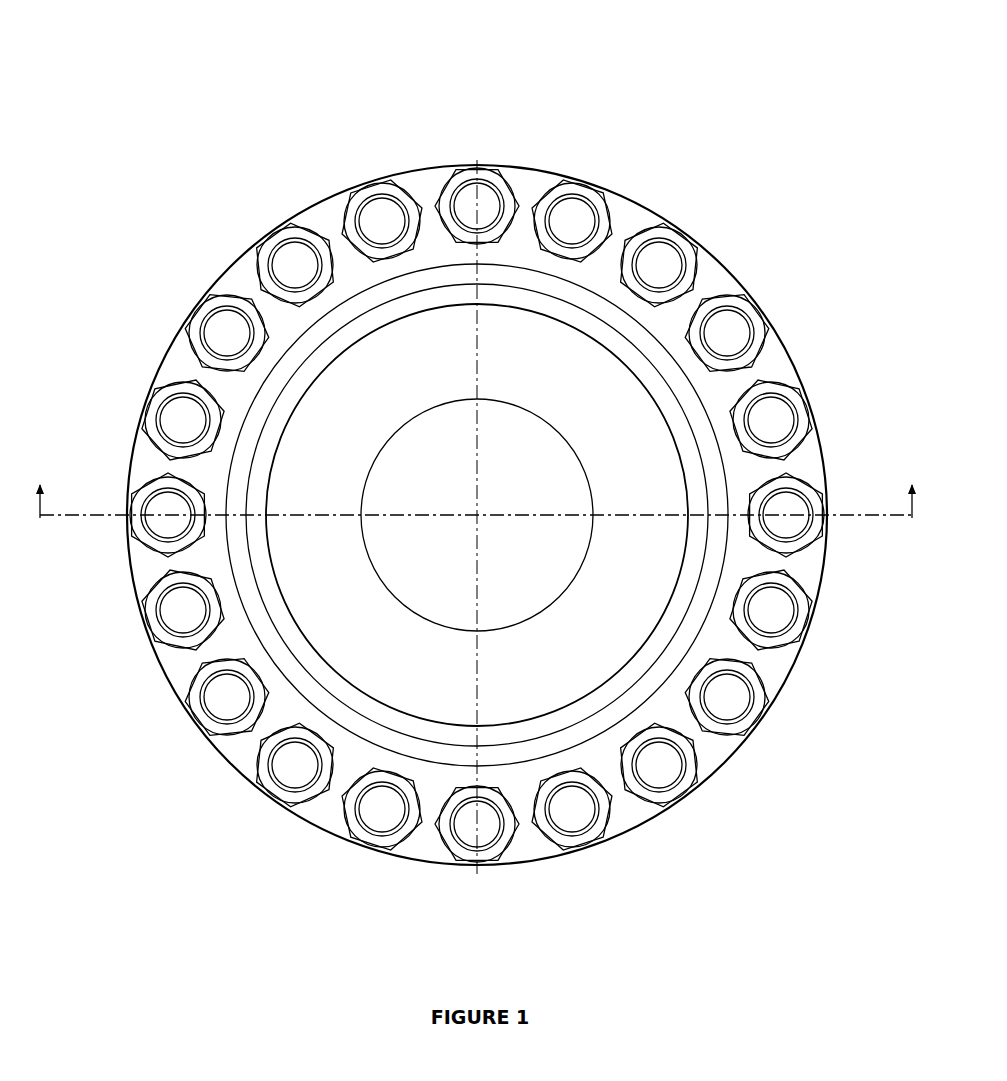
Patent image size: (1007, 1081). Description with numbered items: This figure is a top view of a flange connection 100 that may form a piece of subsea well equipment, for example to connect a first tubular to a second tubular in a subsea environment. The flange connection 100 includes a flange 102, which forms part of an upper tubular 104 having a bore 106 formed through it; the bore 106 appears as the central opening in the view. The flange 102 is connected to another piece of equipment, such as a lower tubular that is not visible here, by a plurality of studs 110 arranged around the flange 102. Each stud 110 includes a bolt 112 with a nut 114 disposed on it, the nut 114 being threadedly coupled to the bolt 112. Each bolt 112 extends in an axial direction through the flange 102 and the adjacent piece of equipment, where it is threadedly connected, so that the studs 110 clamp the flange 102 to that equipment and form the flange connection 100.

The flange connection 100 is at (132, 47).
The flange 102 is at (477, 478).
The upper tubular 104 is at (570, 382).
The bore 106 is at (572, 452).
The stud 110 is at (467, 177).
The bolt 112 is at (482, 200).
The nut 114 is at (495, 167).